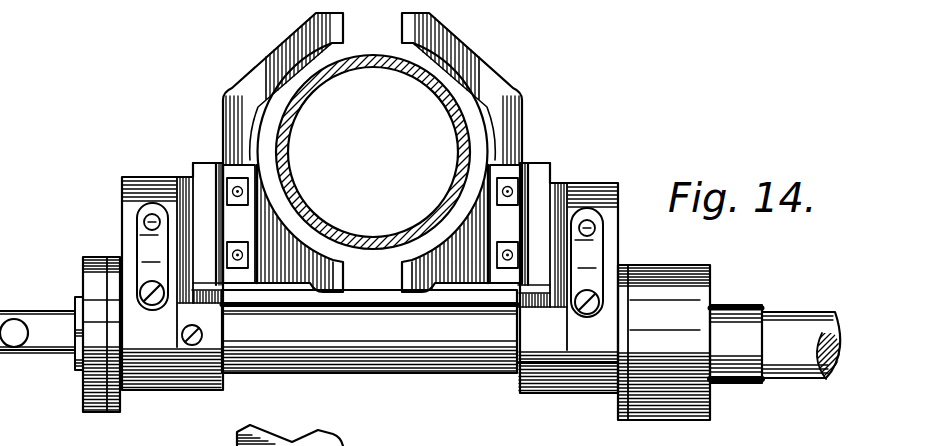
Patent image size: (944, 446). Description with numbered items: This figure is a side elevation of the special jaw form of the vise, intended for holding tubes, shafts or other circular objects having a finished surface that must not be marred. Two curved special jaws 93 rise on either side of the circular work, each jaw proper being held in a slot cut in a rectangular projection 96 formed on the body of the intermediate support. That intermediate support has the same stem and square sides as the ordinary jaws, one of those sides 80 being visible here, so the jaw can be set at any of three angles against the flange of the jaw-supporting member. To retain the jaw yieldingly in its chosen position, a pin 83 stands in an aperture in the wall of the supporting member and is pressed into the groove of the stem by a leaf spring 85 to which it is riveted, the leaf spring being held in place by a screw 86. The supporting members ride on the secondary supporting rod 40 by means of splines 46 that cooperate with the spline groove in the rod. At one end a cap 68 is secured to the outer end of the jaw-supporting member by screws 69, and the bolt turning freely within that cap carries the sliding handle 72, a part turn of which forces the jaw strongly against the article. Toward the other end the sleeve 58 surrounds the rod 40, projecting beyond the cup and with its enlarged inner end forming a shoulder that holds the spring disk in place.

The special jaw 93 is at (277, 51).
The rectangular projection 96 is at (238, 167).
The side of jaw 80 is at (200, 185).
The pin 83 is at (146, 222).
The leaf spring 85 is at (145, 239).
The screw 86 is at (152, 307).
The sliding handle 72 is at (21, 321).
The screws 69 is at (70, 355).
The cap 68 is at (92, 413).
The splines 46 is at (673, 264).
The sleeve 58 is at (728, 305).
The secondary supporting rod 40 is at (803, 312).